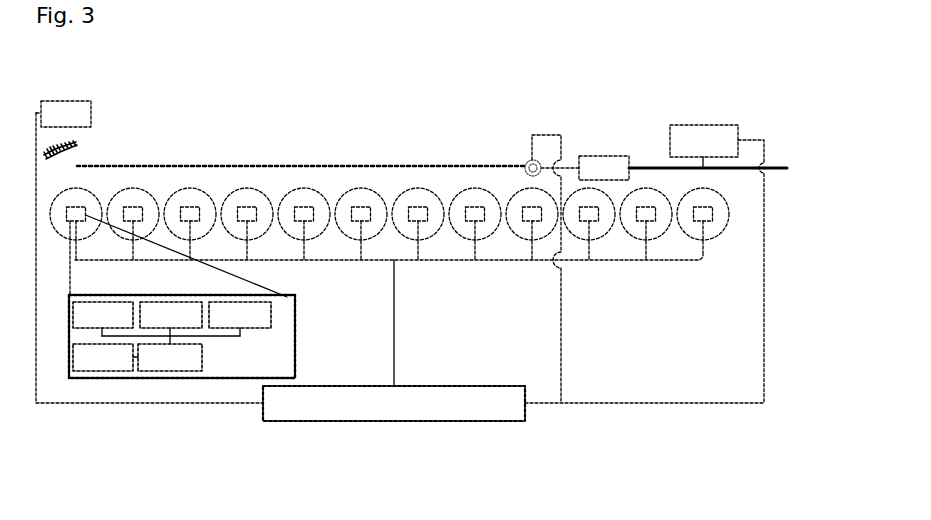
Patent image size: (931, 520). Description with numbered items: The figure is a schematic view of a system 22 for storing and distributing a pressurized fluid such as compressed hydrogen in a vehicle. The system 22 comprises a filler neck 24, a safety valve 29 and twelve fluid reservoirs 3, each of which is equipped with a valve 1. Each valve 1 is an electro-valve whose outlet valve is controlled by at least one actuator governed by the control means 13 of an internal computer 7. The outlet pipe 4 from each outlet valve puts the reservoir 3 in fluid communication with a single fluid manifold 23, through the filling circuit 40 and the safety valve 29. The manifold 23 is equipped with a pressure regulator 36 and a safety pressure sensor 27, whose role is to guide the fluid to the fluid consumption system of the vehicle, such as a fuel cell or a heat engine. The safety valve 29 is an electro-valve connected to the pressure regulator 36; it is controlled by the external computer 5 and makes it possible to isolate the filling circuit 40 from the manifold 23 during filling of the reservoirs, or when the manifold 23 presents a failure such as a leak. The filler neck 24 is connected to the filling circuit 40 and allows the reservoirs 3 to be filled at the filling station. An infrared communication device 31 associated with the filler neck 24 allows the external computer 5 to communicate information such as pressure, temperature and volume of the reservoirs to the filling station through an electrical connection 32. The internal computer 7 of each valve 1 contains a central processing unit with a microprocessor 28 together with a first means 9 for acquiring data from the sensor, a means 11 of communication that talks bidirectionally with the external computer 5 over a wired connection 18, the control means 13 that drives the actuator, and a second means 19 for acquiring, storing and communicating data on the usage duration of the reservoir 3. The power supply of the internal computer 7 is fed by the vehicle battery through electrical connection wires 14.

The valve 1 is at (247, 207).
The fluid reservoir 3 is at (235, 186).
The outlet pipe 4 is at (573, 163).
The external computer 5 is at (388, 435).
The internal computer 7 is at (234, 344).
The first means for acquiring data 9 is at (170, 302).
The means of communication 11 is at (180, 373).
The control means 13 is at (73, 318).
The electrical connection wires 14 is at (561, 297).
The wired connection 18 is at (394, 317).
The second means for acquiring, storing and communicating data 19 is at (267, 302).
The system 22 is at (581, 280).
The fluid manifold 23 is at (660, 165).
The filler neck 24 is at (80, 147).
The safety pressure sensor 27 is at (728, 125).
The microprocessor 28 is at (82, 378).
The safety valve 29 is at (526, 165).
The infrared communication device 31 is at (91, 116).
The electrical connection 32 is at (90, 404).
The pressure regulator 36 is at (612, 155).
The filling circuit 40 is at (321, 165).